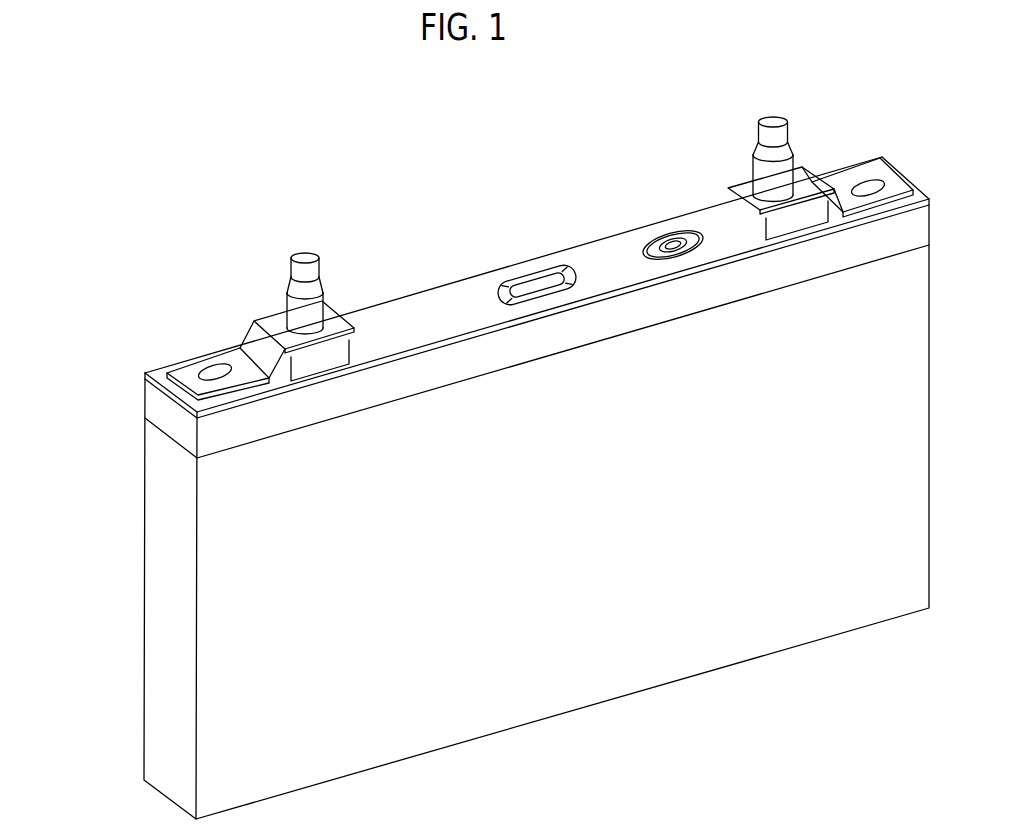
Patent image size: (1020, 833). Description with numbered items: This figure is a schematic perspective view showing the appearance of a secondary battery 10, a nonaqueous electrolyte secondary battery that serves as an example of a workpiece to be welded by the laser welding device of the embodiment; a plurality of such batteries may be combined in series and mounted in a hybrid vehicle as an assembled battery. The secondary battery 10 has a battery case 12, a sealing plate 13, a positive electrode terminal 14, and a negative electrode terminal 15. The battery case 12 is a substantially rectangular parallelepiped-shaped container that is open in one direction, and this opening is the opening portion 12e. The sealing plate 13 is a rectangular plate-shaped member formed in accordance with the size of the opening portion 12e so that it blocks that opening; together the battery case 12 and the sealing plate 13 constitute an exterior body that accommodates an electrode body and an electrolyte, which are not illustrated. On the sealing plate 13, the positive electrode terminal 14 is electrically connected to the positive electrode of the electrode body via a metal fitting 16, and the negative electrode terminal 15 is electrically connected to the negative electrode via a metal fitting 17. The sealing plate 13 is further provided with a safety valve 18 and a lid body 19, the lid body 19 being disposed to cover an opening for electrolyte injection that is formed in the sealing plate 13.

The secondary battery 10 is at (105, 247).
The battery case 12 is at (602, 677).
The opening portion 12e is at (397, 299).
The sealing plate 13 is at (474, 287).
The positive electrode terminal 14 is at (303, 255).
The negative electrode terminal 15 is at (774, 121).
The metal fitting 16 is at (248, 342).
The metal fitting 17 is at (802, 177).
The safety valve 18 is at (545, 283).
The lid body 19 is at (673, 245).